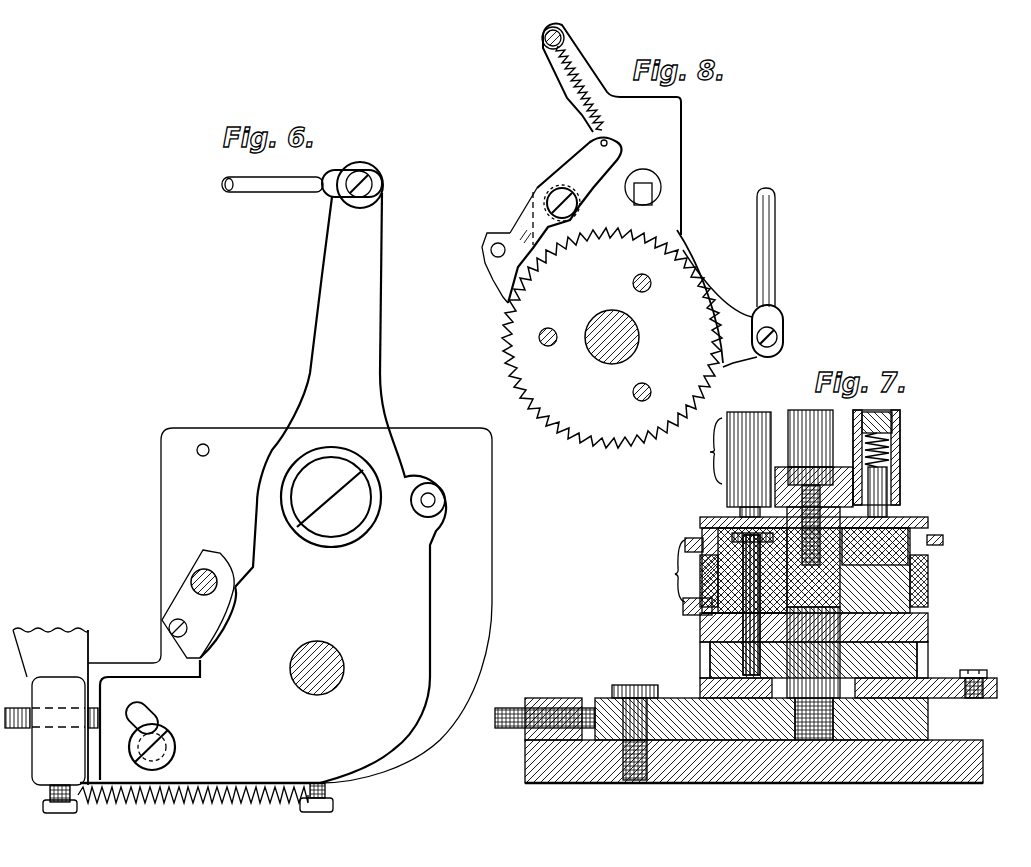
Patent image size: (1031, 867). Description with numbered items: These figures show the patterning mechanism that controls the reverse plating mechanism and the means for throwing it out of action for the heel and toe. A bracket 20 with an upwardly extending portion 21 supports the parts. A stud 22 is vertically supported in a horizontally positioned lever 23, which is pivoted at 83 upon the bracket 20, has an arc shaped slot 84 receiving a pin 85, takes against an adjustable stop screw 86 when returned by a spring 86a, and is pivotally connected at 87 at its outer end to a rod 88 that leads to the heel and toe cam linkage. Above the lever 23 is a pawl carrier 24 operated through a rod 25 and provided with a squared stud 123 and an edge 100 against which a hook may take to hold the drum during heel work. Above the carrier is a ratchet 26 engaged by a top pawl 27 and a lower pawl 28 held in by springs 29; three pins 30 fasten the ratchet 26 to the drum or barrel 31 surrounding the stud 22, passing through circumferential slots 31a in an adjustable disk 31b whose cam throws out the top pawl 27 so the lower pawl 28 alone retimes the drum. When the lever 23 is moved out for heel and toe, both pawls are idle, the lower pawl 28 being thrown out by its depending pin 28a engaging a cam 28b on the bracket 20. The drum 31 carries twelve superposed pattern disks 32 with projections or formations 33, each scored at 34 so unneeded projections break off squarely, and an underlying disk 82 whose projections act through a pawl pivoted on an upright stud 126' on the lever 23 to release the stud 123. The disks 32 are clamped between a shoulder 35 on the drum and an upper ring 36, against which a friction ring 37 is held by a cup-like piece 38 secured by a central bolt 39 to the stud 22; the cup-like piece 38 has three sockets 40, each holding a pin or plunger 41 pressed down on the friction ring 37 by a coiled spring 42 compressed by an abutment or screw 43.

In FIG. 6, the bracket 20 is at (480, 575).
In FIG. 7, the bracket 20 is at (787, 770).
In FIG. 6, the upwardly extending portion 21 is at (53, 763).
In FIG. 7, the upwardly extending portion 21 is at (555, 705).
In FIG. 6, the stud 22 is at (320, 683).
In FIG. 8, the stud 22 is at (610, 348).
In FIG. 7, the stud 22 is at (802, 663).
In FIG. 6, the lever 23 is at (413, 618).
In FIG. 7, the lever 23 is at (888, 735).
In FIG. 8, the pawl carrier 24 is at (683, 228).
In FIG. 7, the pawl carrier 24 is at (940, 685).
In FIG. 8, the rod 25 is at (776, 232).
In FIG. 7, the rod 25 is at (987, 675).
In FIG. 8, the ratchet 26 is at (607, 427).
In FIG. 7, the ratchet 26 is at (902, 655).
In FIG. 8, the top pawl 27 is at (527, 217).
In FIG. 8, the lower pawl 28 is at (497, 258).
In FIG. 6, the depending pin 28a is at (200, 573).
In FIG. 8, the depending pin 28a is at (491, 250).
In FIG. 6, the cam 28b is at (203, 630).
In FIG. 8, the springs 29 is at (580, 78).
In FIG. 8, the pins 30 is at (638, 275).
In FIG. 7, the pins 30 is at (745, 555).
In FIG. 7, the drum or barrel 31 is at (888, 583).
In FIG. 7, the circumferential slots 31a is at (743, 626).
In FIG. 7, the disk 31b is at (705, 637).
In FIG. 7, the disks 32 is at (684, 573).
In FIG. 7, the projections or formations 33 is at (943, 539).
In FIG. 7, the score or notch 34 is at (685, 545).
In FIG. 7, the shoulder 35 is at (928, 617).
In FIG. 7, the upper ring 36 is at (927, 528).
In FIG. 7, the friction ring 37 is at (907, 515).
In FIG. 7, the cup-like piece 38 is at (702, 451).
In FIG. 7, the central bolt 39 is at (775, 493).
In FIG. 7, the sockets 40 is at (750, 422).
In FIG. 7, the pin or plunger 41 is at (877, 492).
In FIG. 7, the coiled spring 42 is at (893, 448).
In FIG. 7, the abutment or screw 43 is at (887, 423).
In FIG. 7, the underlying disk 82 is at (683, 607).
In FIG. 6, the pivot 83 is at (336, 523).
In FIG. 6, the arc shaped slot 84 is at (145, 713).
In FIG. 7, the arc shaped slot 84 is at (623, 710).
In FIG. 6, the pin 85 is at (173, 746).
In FIG. 7, the pin 85 is at (657, 693).
In FIG. 6, the adjustable stop screw 86 is at (27, 723).
In FIG. 7, the adjustable stop screw 86 is at (518, 718).
In FIG. 6, the spring 86a is at (220, 787).
In FIG. 6, the pivot 87 is at (372, 173).
In FIG. 6, the rod 88 is at (242, 185).
In FIG. 8, the edge 100 is at (733, 363).
In FIG. 8, the squared stud 123 is at (652, 195).
In FIG. 6, the upright stud 126' is at (444, 479).